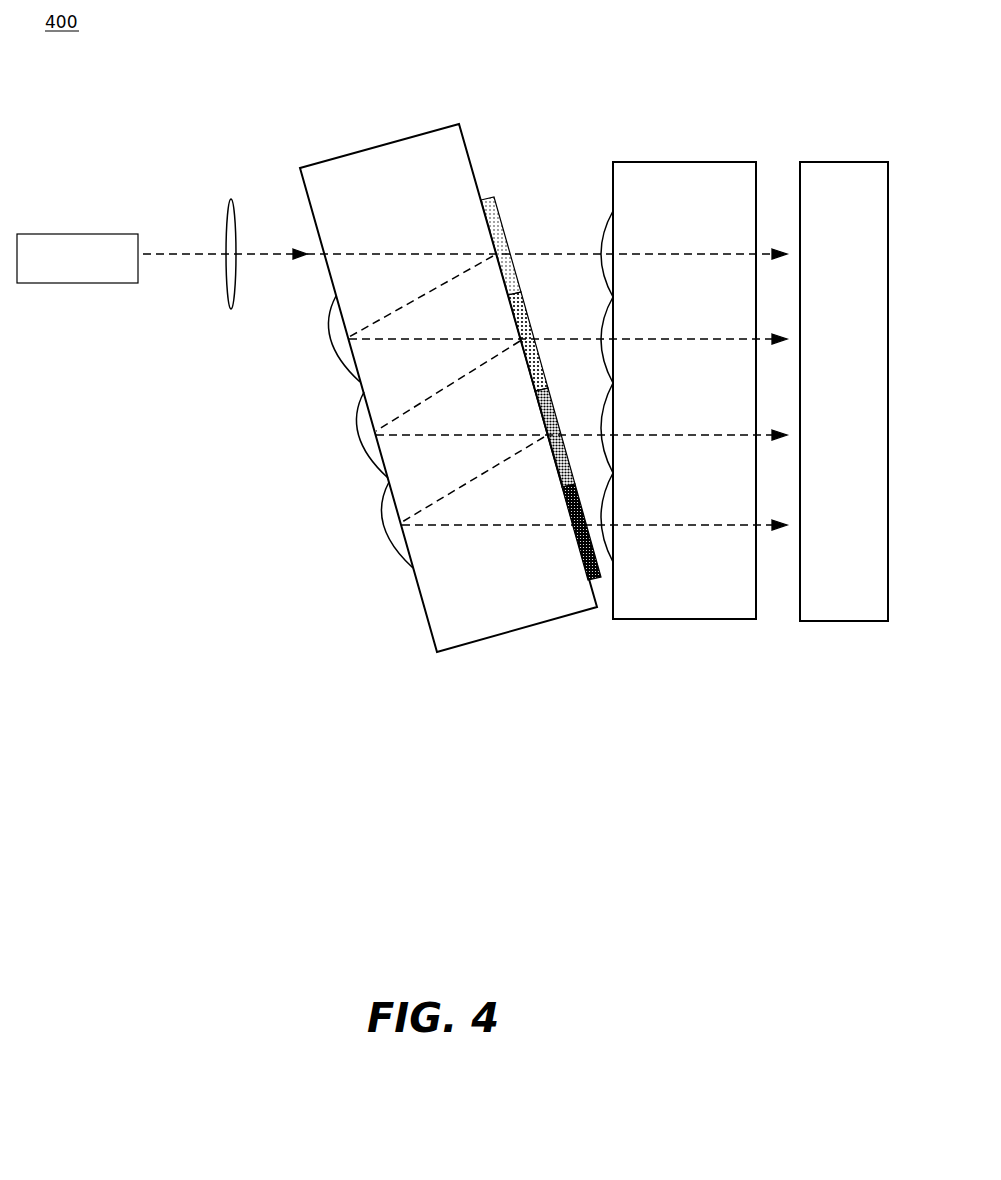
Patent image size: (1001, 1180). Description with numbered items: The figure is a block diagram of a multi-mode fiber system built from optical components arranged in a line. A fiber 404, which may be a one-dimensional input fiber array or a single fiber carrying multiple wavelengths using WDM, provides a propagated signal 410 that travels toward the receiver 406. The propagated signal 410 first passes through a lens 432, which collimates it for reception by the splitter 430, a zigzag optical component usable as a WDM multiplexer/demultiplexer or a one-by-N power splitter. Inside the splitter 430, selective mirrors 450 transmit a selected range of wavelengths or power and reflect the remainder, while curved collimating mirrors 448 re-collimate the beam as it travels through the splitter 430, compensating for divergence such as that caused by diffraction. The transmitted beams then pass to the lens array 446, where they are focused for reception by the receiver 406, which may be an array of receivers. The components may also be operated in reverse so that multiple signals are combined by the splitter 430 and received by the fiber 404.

The fiber 404 is at (94, 234).
The receiver 406 is at (830, 165).
The propagated signal 410 is at (210, 253).
The splitter 430 is at (413, 133).
The lens 432 is at (230, 200).
The lens array 446 is at (633, 165).
The collimating mirrors 448 is at (316, 470).
The selective mirrors 450 is at (533, 210).